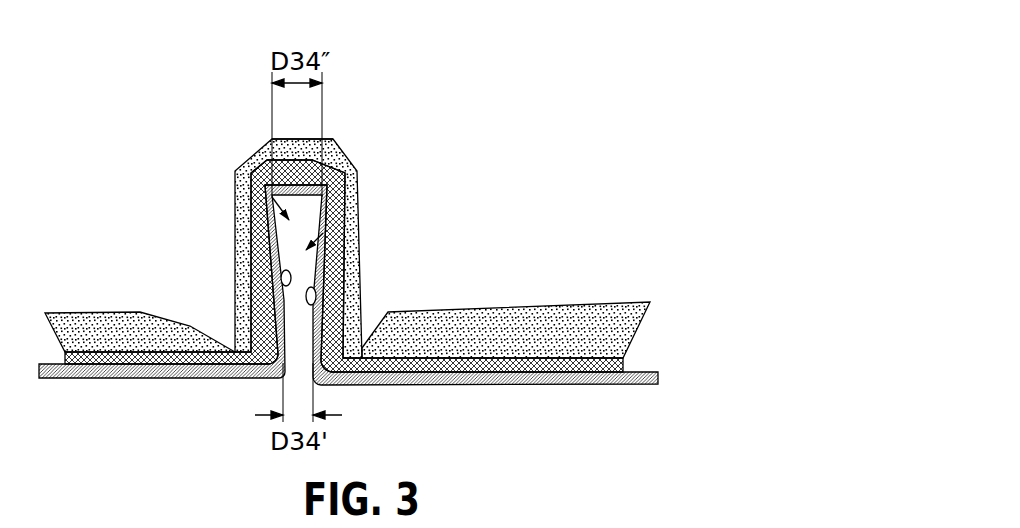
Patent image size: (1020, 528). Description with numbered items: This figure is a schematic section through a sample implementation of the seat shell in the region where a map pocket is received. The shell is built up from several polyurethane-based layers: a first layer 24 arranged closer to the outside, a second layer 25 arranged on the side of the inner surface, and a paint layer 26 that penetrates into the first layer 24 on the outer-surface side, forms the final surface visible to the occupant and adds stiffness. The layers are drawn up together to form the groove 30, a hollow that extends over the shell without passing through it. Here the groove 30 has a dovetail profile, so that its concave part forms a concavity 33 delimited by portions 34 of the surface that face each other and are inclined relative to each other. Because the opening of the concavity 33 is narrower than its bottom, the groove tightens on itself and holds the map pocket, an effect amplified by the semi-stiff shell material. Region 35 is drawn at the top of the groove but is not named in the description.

The first layer 24 is at (623, 360).
The second layer 25 is at (622, 323).
The paint layer 26 is at (640, 385).
The groove 30 is at (326, 232).
The concavity 33 is at (243, 170).
The portions 34 is at (287, 270).
The top portion 35 is at (312, 170).